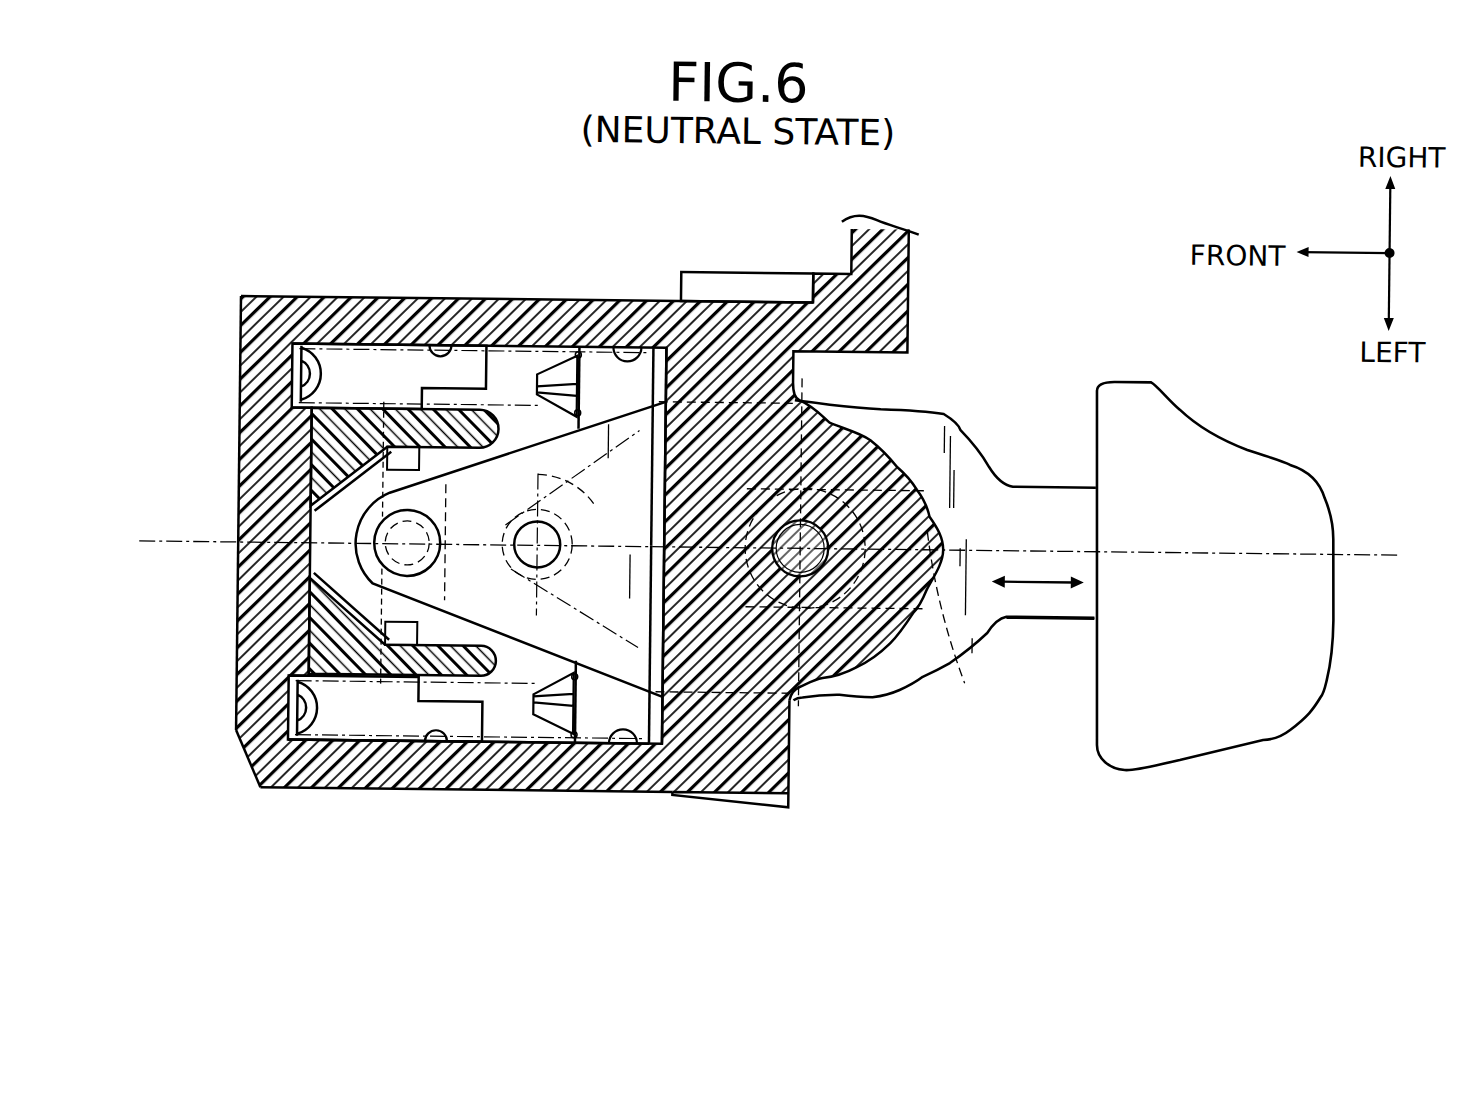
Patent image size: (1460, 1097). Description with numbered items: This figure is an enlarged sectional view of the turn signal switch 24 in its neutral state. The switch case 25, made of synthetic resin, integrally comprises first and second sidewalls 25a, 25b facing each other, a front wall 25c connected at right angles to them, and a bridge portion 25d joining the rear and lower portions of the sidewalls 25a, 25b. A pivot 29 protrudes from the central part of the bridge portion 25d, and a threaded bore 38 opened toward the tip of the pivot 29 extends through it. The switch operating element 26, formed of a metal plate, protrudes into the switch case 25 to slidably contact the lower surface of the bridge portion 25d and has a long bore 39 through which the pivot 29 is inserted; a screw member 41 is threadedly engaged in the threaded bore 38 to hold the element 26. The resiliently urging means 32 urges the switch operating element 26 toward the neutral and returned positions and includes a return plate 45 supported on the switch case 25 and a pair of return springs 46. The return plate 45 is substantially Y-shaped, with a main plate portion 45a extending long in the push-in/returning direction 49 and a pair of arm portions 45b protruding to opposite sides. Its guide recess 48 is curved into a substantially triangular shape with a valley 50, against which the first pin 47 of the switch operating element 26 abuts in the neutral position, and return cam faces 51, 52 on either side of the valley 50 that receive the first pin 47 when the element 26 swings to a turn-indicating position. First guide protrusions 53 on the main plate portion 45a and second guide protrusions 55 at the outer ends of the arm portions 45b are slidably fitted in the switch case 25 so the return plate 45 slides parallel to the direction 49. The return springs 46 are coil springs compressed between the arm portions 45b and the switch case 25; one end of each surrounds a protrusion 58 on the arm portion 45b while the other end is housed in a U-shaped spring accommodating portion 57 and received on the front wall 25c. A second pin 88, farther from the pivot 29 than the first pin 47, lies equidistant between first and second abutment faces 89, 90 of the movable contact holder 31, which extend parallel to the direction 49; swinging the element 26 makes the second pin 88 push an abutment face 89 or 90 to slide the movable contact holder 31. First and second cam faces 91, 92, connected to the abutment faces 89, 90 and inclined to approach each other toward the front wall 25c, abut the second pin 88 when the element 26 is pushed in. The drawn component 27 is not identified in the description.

The turn signal switch 24 is at (949, 403).
The switch case 25 is at (387, 292).
The first sidewall 25a is at (351, 316).
The second sidewall 25b is at (385, 788).
The front wall 25c is at (265, 580).
The bridge portion 25d is at (888, 640).
The switch operating element 26 is at (982, 469).
The knob 27 is at (1248, 457).
The pivot 29 is at (968, 678).
The movable contact holder 31 is at (345, 784).
The resiliently urging means 32 is at (534, 717).
The threaded bore 38 is at (806, 539).
The long bore 39 is at (942, 522).
The screw member 41 is at (857, 594).
The return plate 45 is at (540, 412).
The main plate portion 45a is at (318, 662).
The arm portions 45b is at (594, 360).
The return springs 46 is at (578, 348).
The first pin 47 is at (510, 547).
The guide recess 48 is at (566, 578).
The push-in/returning direction 49 is at (1046, 578).
The valley 50 is at (517, 529).
The first return cam face 51 is at (636, 446).
The second return cam face 52 is at (632, 644).
The first guide protrusions 53 is at (387, 543).
The second guide protrusions 55 is at (648, 432).
The spring accommodating portions 57 is at (440, 350).
The protrusions 58 is at (551, 367).
The second pin 88 is at (385, 540).
The first abutment face 89 is at (452, 445).
The second abutment face 90 is at (442, 627).
The first cam face 91 is at (318, 496).
The second cam face 92 is at (318, 632).